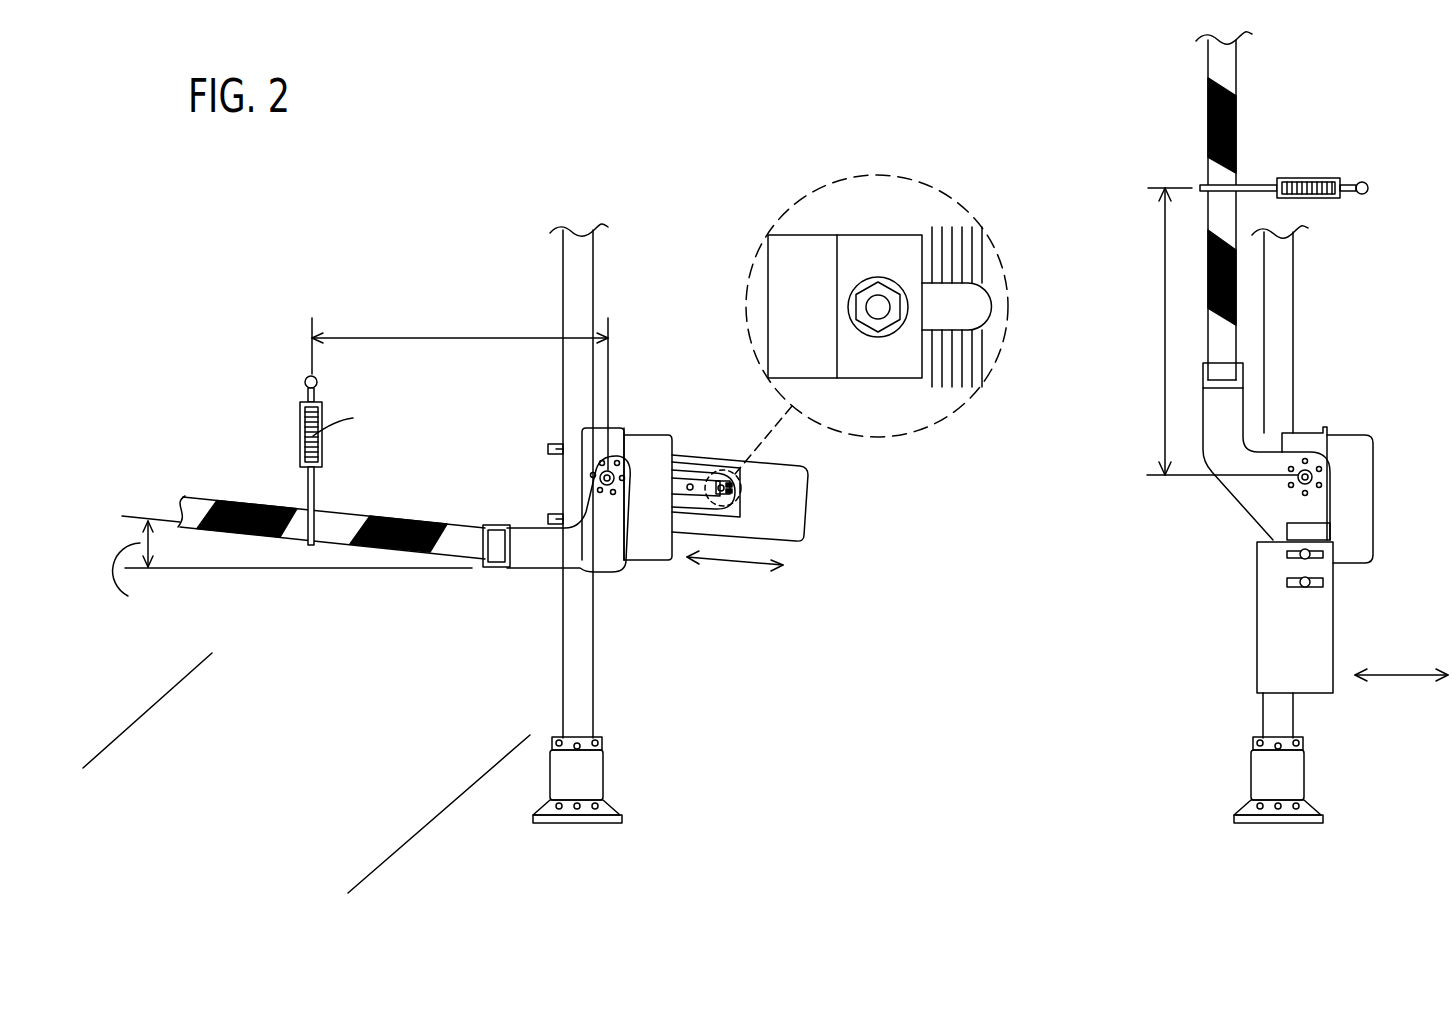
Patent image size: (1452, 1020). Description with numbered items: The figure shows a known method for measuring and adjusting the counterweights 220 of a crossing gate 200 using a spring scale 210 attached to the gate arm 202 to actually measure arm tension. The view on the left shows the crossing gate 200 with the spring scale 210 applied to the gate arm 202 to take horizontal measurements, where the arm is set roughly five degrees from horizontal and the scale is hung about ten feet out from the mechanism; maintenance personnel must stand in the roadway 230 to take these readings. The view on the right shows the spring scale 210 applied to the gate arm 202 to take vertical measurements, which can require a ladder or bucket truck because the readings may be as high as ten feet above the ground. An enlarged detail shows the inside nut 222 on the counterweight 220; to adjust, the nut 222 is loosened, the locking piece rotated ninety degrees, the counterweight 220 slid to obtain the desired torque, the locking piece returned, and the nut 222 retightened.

The crossing gate 200 is at (663, 665).
The gate arm 202 is at (382, 548).
The spring scale 210 is at (300, 436).
The counterweight 220 is at (807, 503).
The inside nut 222 is at (878, 263).
The roadway 230 is at (305, 792).